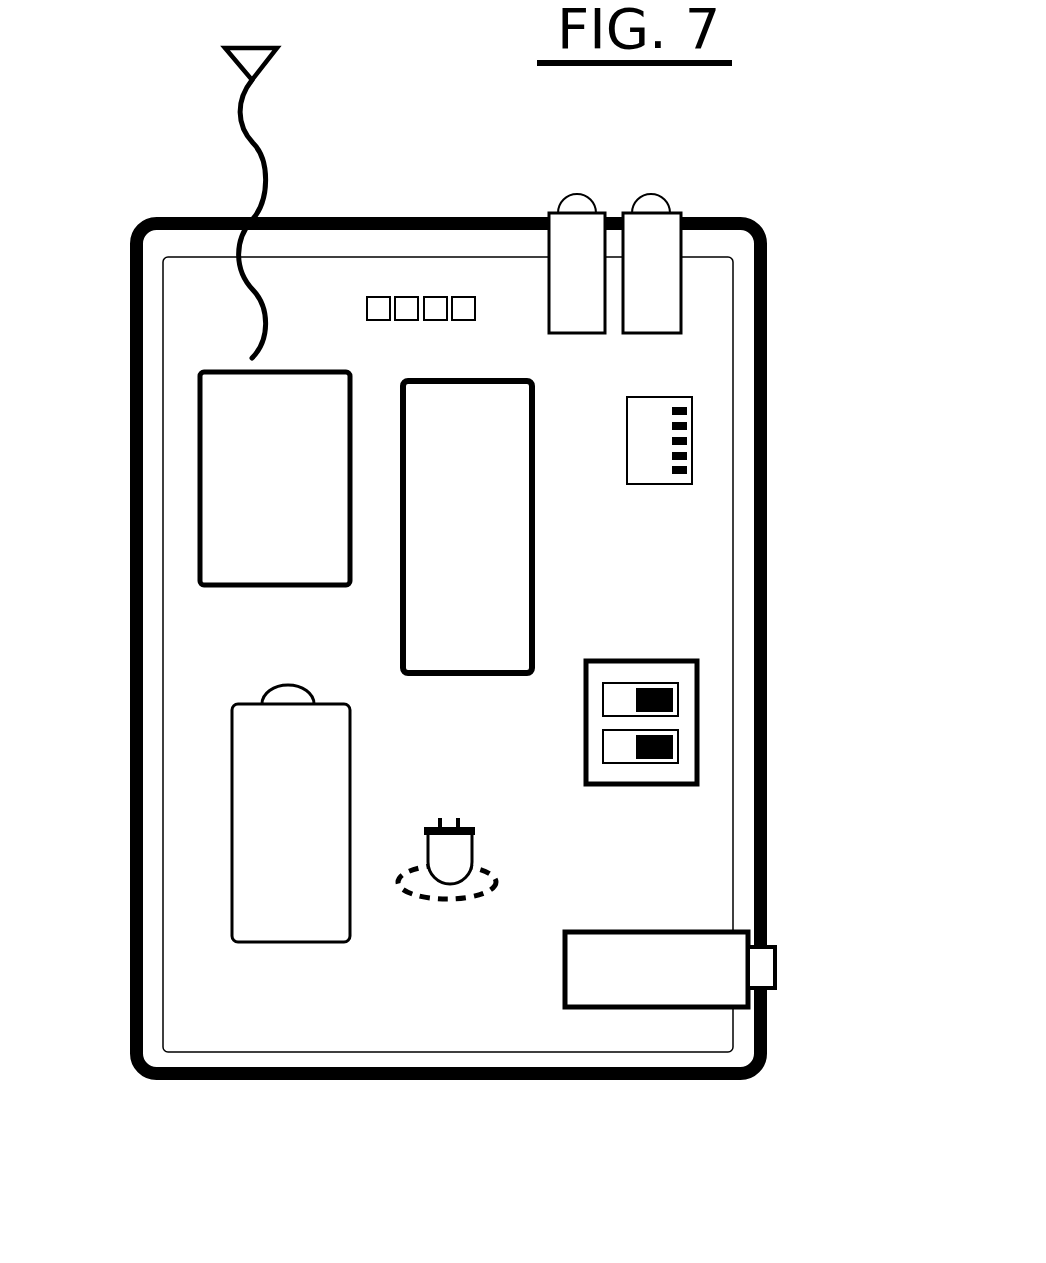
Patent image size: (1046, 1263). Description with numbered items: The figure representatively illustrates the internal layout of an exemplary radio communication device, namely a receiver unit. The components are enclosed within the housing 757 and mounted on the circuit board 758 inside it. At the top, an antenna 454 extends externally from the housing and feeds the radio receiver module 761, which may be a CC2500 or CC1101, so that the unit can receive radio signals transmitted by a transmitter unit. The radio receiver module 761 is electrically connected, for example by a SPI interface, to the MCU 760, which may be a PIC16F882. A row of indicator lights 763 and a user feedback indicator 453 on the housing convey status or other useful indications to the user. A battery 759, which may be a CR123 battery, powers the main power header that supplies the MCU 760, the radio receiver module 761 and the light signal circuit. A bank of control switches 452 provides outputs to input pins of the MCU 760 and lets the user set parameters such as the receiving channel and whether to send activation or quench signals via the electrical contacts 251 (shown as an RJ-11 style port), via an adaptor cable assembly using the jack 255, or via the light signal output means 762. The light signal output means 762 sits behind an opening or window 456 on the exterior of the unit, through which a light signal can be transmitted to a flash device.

The housing 757 is at (768, 331).
The circuit board 758 is at (447, 1002).
The antenna 454 is at (232, 203).
The indicator lights 763 is at (425, 287).
The user feedback indicator 453 is at (615, 245).
The radio receiver module 761 is at (227, 405).
The MCU 760 is at (548, 584).
The electrical contacts 251 is at (702, 420).
The user input means 452 is at (713, 690).
The battery 759 is at (217, 735).
The opening or window 456 is at (525, 880).
The light signal output means 762 is at (488, 845).
The connector or port 255 is at (700, 969).